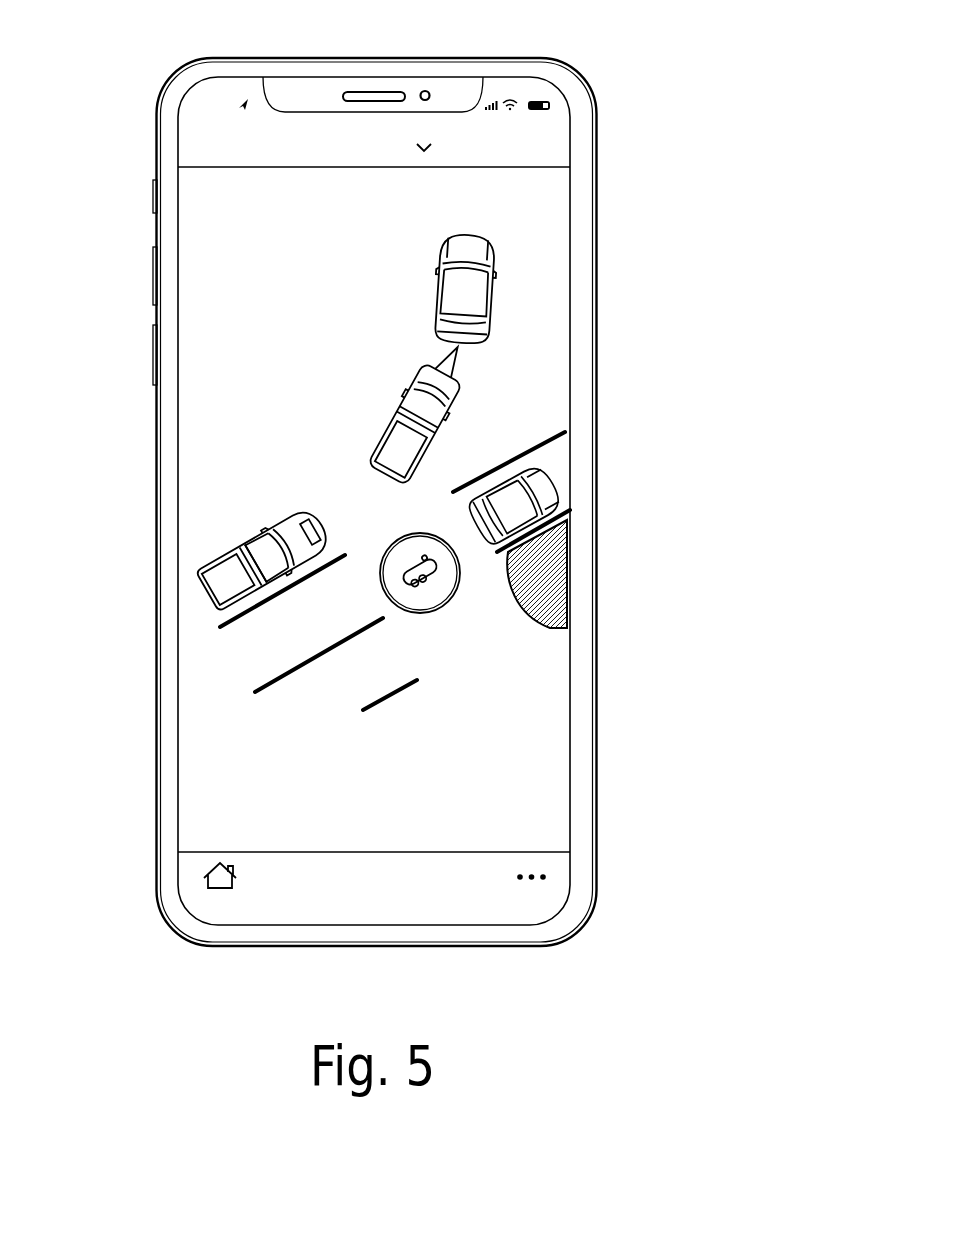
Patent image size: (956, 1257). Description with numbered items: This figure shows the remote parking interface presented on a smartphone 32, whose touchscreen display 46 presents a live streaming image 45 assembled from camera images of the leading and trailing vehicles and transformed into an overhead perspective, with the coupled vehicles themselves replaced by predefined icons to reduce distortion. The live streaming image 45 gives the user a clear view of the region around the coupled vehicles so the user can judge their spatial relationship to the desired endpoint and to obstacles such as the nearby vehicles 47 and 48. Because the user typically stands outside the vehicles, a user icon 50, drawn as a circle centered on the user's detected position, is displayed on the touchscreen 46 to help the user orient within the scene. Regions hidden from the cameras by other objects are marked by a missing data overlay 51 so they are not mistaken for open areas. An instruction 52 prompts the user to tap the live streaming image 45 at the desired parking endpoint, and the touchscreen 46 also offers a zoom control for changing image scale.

The smartphone 32 is at (627, 135).
The touchscreen display 46 is at (225, 242).
The live streaming image 45 is at (235, 325).
The nearby vehicle 47 is at (215, 560).
The nearby vehicle 48 is at (548, 480).
The user icon 50 is at (447, 607).
The missing data overlay 51 is at (550, 600).
The instruction 52 is at (455, 827).